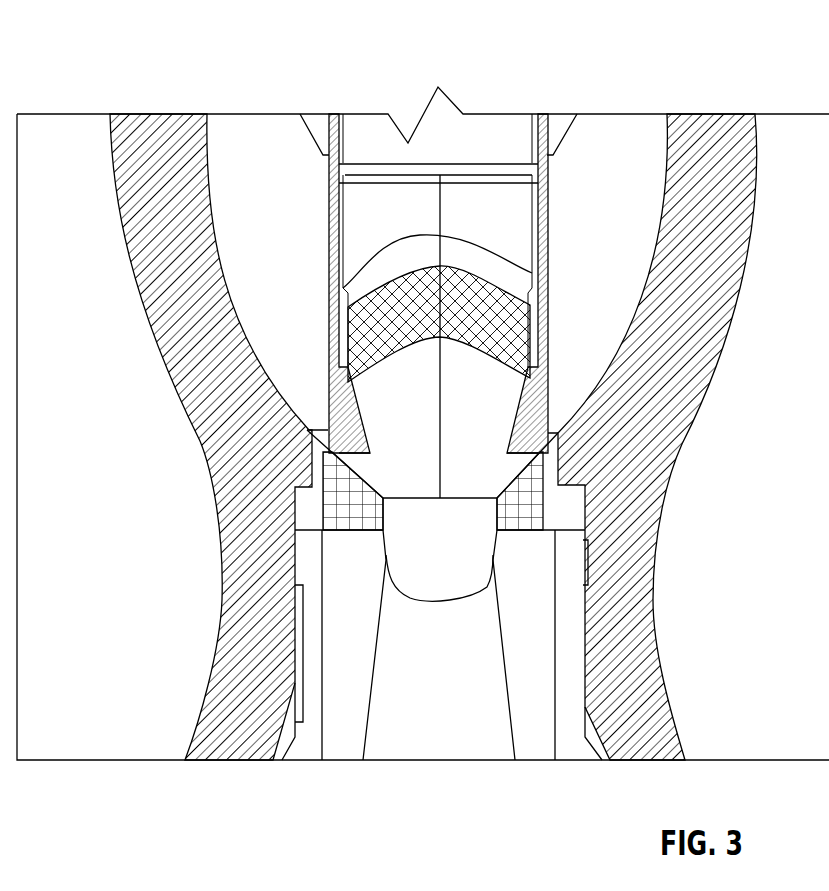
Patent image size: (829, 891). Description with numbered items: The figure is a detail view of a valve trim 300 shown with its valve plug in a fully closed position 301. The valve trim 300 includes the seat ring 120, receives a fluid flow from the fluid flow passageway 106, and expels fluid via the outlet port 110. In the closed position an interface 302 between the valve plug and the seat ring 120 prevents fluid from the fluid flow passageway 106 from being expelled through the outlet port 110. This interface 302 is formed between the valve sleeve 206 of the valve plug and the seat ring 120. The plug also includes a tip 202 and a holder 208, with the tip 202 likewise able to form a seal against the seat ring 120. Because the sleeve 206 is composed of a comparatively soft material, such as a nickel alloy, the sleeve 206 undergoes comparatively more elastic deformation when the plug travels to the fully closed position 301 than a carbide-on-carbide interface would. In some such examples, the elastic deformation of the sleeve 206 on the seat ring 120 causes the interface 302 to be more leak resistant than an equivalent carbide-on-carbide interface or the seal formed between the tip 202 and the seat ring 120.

The fluid flow passageway 106 is at (295, 231).
The outlet port 110 is at (441, 752).
The seat ring 120 is at (553, 490).
The tip 202 is at (405, 597).
The valve sleeve 206 is at (547, 293).
The holder 208 is at (540, 242).
The valve trim 300 is at (657, 52).
The fully closed position 301 is at (633, 97).
The interface 302 is at (550, 433).